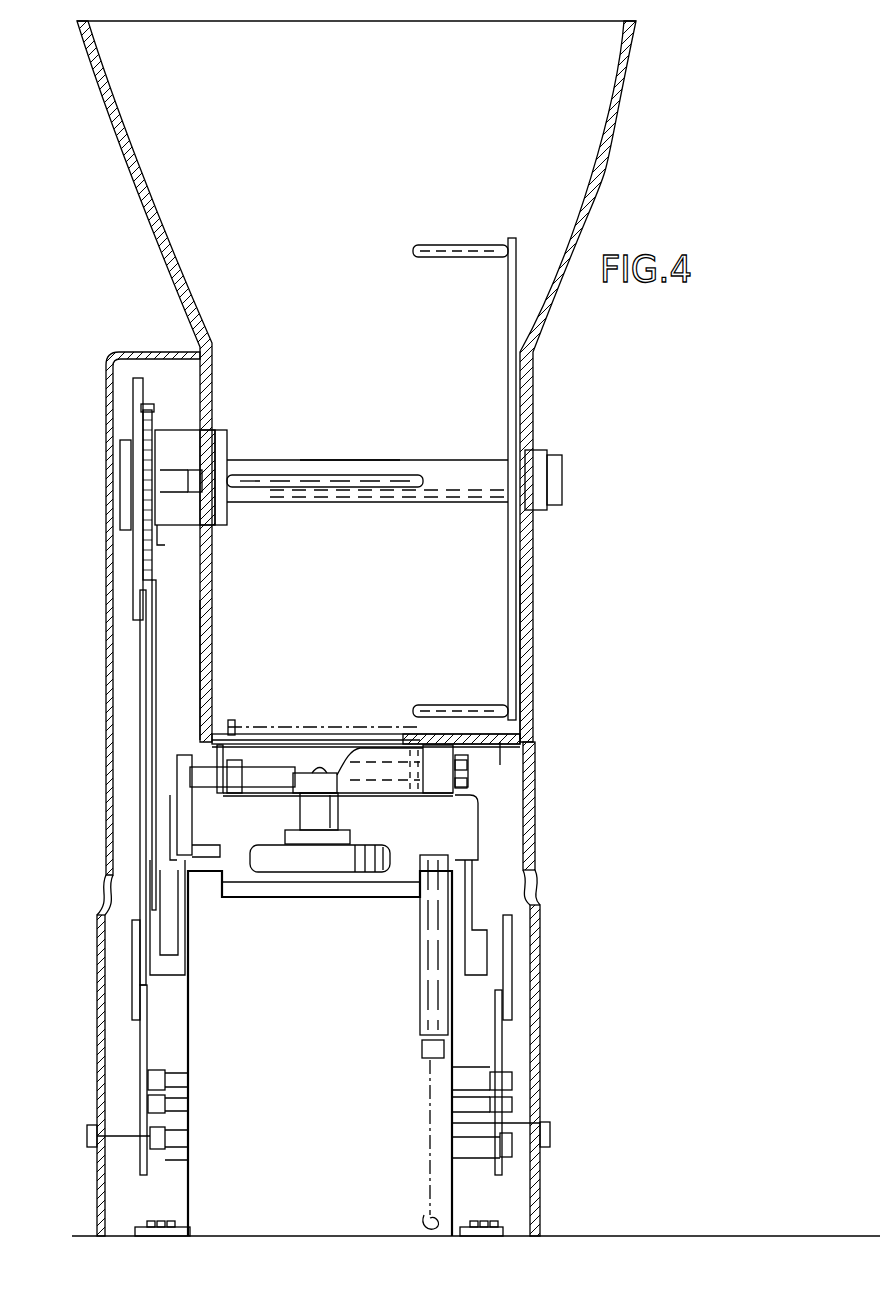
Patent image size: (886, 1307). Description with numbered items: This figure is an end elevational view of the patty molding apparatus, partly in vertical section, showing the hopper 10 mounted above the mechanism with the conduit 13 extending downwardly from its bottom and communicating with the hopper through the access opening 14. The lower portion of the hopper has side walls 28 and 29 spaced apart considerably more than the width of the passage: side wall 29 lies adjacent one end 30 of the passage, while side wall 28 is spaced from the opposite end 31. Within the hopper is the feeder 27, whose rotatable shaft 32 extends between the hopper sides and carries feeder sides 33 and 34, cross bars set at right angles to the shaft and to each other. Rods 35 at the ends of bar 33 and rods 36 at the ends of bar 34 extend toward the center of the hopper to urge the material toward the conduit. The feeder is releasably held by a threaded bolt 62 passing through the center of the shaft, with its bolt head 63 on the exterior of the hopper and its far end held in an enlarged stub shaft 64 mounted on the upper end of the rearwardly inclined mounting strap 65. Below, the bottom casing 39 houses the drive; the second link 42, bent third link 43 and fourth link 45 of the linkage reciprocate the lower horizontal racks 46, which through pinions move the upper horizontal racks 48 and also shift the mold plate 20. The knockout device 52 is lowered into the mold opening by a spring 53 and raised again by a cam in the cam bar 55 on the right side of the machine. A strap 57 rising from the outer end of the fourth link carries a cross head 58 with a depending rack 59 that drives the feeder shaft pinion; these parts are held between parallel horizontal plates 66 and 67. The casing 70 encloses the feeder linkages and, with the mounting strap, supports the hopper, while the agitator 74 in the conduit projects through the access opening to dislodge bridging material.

The hopper 10 is at (608, 157).
The conduit 13 is at (278, 748).
The access opening 14 is at (330, 745).
The mold plate 20 is at (308, 897).
The feeder 27 is at (350, 458).
The side wall 28 is at (535, 605).
The side wall 29 is at (200, 660).
The end of the passage 30 is at (232, 720).
The opposite end 31 is at (410, 742).
The rotatable shaft 32 is at (438, 458).
The feeder side 33 is at (508, 398).
The feeder side 34 is at (222, 448).
The rod 35 is at (456, 247).
The rod 36 is at (298, 490).
The bottom casing 39 is at (308, 1113).
The second link 42 is at (135, 1097).
The third link 43 is at (147, 1050).
The fourth link 45 is at (135, 965).
The lower horizontal rack 46 is at (180, 928).
The upper horizontal rack 48 is at (177, 818).
The knockout device 52 is at (345, 815).
The spring 53 is at (430, 1120).
The cam bar 55 is at (468, 915).
The strap 57 is at (142, 635).
The cross head 58 is at (130, 392).
The depending rack 59 is at (150, 410).
The threaded bolt 62 is at (200, 490).
The bolt head 63 is at (558, 452).
The stub shaft 64 is at (156, 440).
The mounting strap 65 is at (158, 660).
The horizontal plate 66 is at (162, 530).
The horizontal plate 67 is at (120, 470).
The casing 70 is at (108, 772).
The agitator 74 is at (258, 725).